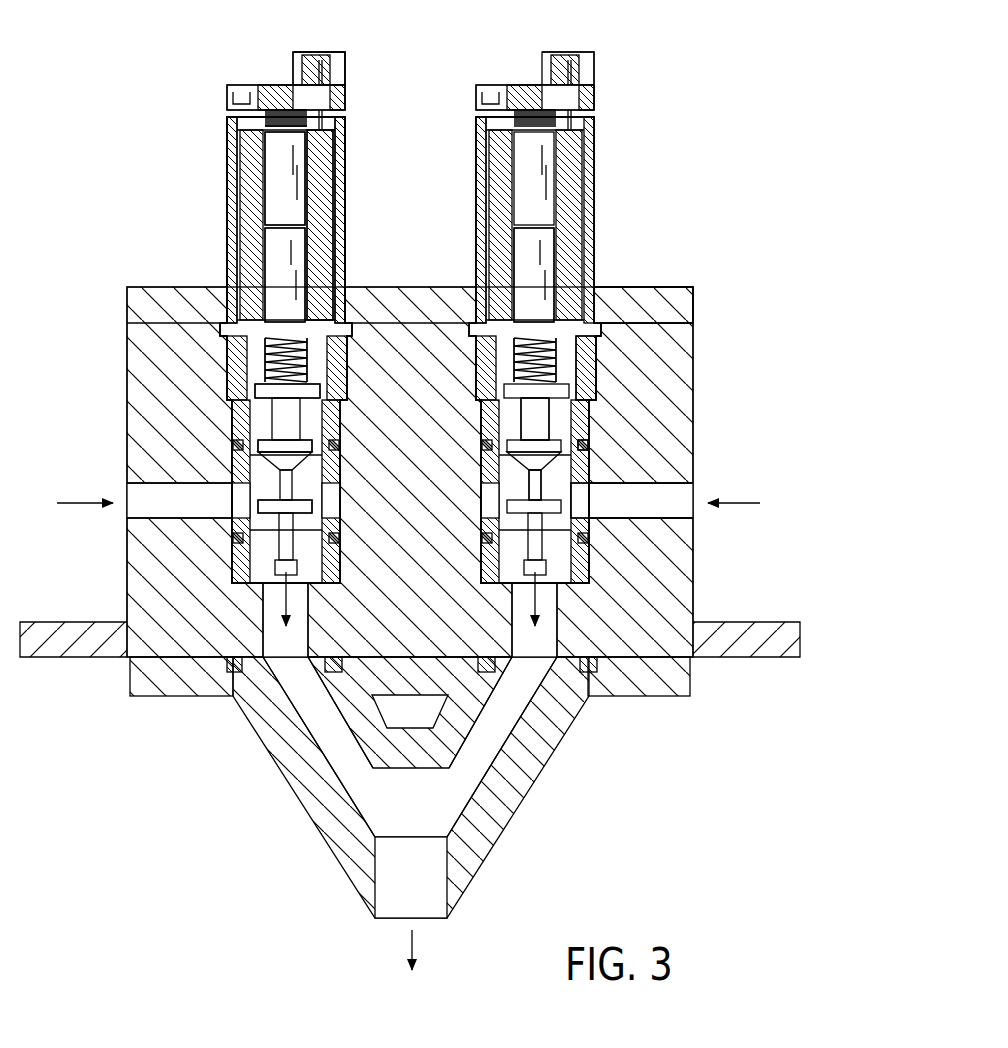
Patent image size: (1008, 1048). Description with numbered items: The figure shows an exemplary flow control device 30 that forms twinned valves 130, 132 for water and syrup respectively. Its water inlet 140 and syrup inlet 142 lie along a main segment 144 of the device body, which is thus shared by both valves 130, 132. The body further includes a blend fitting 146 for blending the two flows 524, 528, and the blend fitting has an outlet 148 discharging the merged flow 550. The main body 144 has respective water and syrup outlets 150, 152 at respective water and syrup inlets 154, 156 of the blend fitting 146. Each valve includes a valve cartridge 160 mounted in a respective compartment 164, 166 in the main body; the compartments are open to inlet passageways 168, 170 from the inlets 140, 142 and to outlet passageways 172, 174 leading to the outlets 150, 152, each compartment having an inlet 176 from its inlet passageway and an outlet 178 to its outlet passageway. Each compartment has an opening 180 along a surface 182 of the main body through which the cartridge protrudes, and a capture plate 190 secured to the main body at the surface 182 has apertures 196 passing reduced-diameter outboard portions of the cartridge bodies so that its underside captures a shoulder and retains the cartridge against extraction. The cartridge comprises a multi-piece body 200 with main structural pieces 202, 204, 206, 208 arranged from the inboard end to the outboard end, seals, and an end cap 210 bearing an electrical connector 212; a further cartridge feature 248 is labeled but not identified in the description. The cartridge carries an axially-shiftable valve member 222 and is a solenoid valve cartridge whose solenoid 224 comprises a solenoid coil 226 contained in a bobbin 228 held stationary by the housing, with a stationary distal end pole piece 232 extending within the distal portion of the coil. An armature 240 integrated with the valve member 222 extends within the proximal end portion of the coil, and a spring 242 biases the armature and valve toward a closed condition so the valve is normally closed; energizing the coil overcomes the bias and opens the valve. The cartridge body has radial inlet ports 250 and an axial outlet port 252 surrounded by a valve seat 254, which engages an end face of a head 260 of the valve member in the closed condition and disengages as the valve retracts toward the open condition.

The flow control device 30 is at (116, 146).
The valve 130 is at (172, 66).
The valve 132 is at (630, 47).
The water inlet 140 is at (116, 493).
The syrup inlet 142 is at (705, 490).
The main segment 144 is at (675, 382).
The blend fitting 146 is at (547, 784).
The outlet 148 is at (385, 926).
The water outlet 150 is at (299, 665).
The syrup outlet 152 is at (526, 663).
The water inlet 154 is at (273, 657).
The syrup inlet 156 is at (547, 648).
The valve cartridge 160 is at (613, 160).
The compartment 164 is at (478, 333).
The compartment 166 is at (600, 353).
The inlet passageway 168 is at (166, 512).
The inlet passageway 170 is at (660, 518).
The outlet passageway 172 is at (272, 620).
The outlet passageway 174 is at (553, 615).
The compartment inlet 176 is at (596, 498).
The compartment outlet 178 is at (657, 512).
The opening 180 is at (600, 313).
The surface 182 is at (655, 322).
The capture plate 190 is at (648, 300).
The apertures 196 is at (237, 302).
The multi-piece body 200 is at (204, 258).
The main structural piece 202 is at (230, 547).
The main structural piece 204 is at (230, 430).
The main structural piece 206 is at (230, 380).
The main structural piece 208 is at (343, 223).
The end cap 210 is at (242, 88).
The electrical connector 212 is at (338, 68).
The valve member 222 is at (276, 474).
The solenoid 224 is at (344, 164).
The solenoid coil 226 is at (320, 197).
The bobbin 228 is at (312, 160).
The distal end pole piece 232 is at (277, 173).
The armature 240 is at (277, 258).
The spring 242 is at (530, 335).
The housing 248 is at (477, 118).
The radial inlet ports 250 is at (507, 497).
The axial outlet port 252 is at (264, 623).
The valve seat 254 is at (588, 467).
The head 260 is at (525, 523).
The water flow 524 is at (85, 505).
The syrup flow 528 is at (730, 503).
The merged flow 550 is at (410, 952).